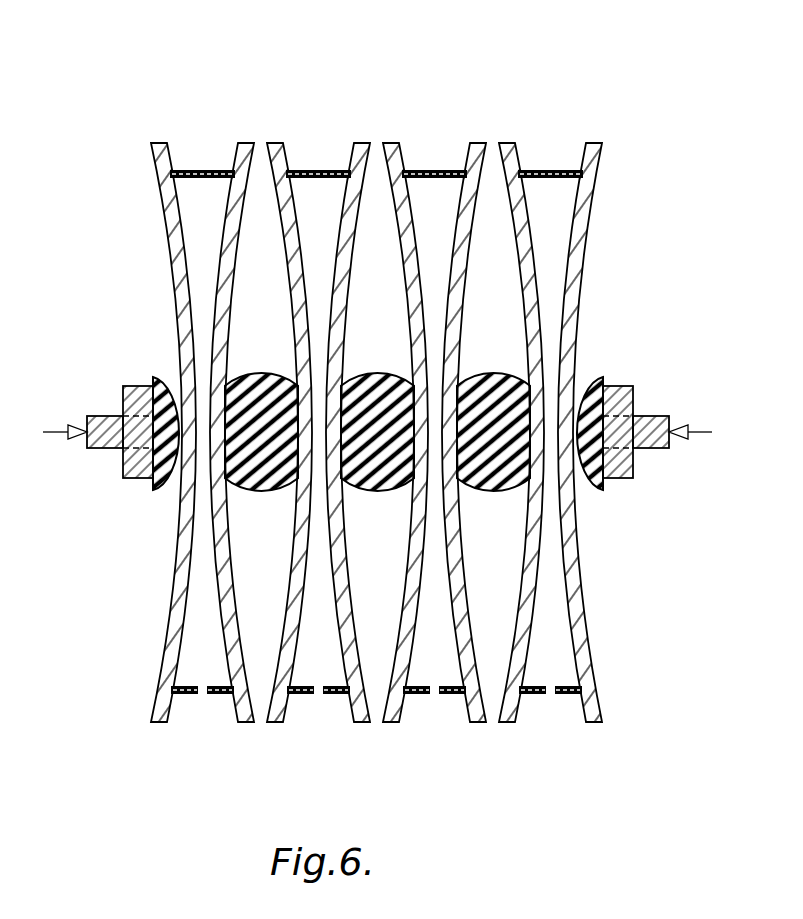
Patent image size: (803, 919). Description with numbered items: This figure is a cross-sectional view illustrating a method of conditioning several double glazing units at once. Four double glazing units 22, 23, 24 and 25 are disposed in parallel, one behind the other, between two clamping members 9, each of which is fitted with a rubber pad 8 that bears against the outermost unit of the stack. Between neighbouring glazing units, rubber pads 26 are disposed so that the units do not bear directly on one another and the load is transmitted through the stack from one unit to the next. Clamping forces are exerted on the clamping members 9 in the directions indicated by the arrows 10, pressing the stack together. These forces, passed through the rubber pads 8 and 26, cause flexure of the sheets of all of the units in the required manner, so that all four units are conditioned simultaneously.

The double glazing unit 22 is at (159, 130).
The double glazing unit 23 is at (274, 130).
The double glazing unit 24 is at (389, 130).
The double glazing unit 25 is at (505, 130).
The rubber pad 26 is at (262, 463).
The rubber pad 8 is at (161, 487).
The clamping member 9 is at (140, 388).
The arrow 10 is at (66, 433).